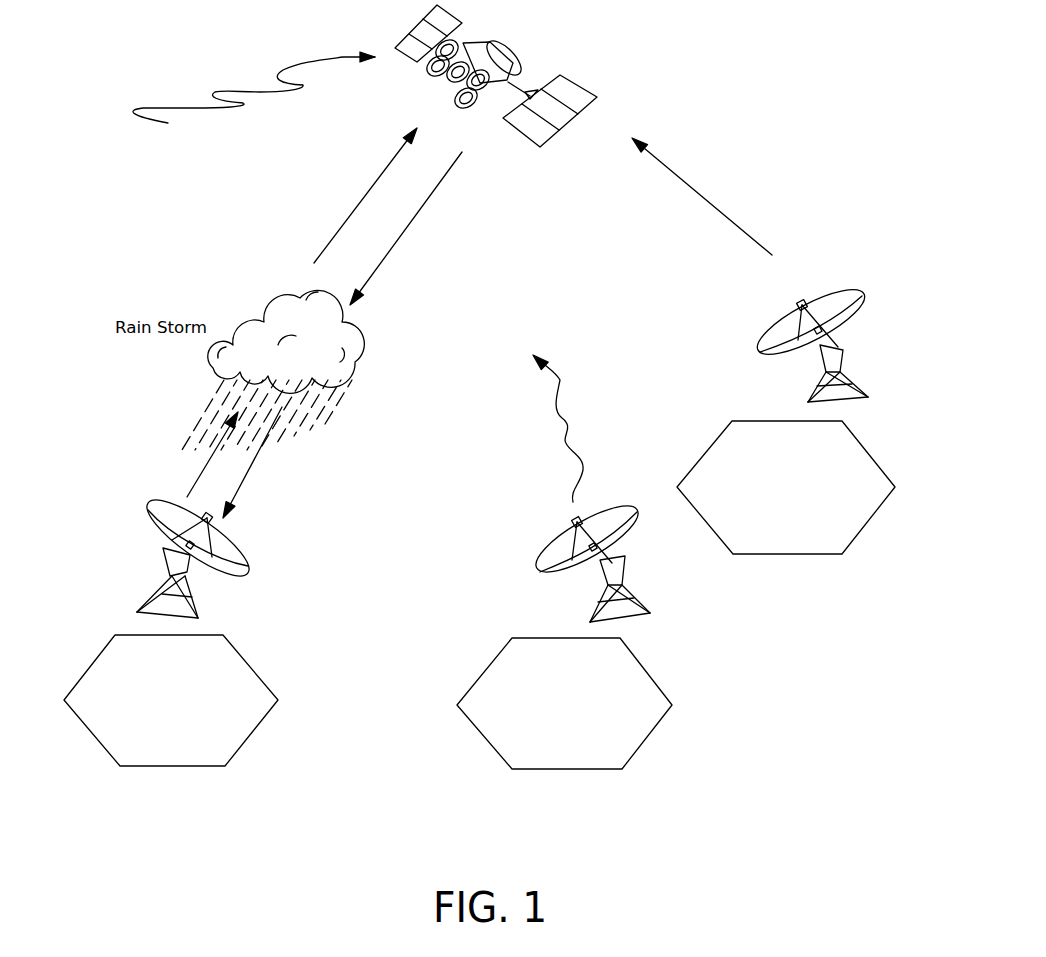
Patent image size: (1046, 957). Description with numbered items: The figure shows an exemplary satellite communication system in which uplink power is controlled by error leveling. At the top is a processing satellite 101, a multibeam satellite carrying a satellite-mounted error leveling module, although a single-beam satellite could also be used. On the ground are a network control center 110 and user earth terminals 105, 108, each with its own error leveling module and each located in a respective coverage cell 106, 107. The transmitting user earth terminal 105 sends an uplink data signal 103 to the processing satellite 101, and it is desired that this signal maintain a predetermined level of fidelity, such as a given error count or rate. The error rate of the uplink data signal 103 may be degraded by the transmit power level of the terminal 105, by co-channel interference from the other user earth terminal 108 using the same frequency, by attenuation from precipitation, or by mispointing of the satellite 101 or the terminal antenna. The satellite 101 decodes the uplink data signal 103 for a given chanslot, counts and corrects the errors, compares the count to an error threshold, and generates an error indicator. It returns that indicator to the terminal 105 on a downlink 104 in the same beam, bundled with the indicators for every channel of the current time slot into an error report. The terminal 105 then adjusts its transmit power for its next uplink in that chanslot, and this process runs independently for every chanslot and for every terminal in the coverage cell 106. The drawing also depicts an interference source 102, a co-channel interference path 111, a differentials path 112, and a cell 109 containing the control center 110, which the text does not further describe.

The processing satellite 101 is at (512, 55).
The interference from other systems 102 is at (215, 92).
The uplink data signal 103 is at (373, 182).
The downlink 104 is at (400, 237).
The user earth terminal 105 is at (163, 557).
The coverage cell 106 is at (252, 732).
The coverage cell 107 is at (650, 733).
The user earth terminal 108 is at (545, 553).
The cell containing control center 109 is at (865, 527).
The network control center 110 is at (860, 315).
The co-channel interference 111 is at (560, 380).
The differentials 112 is at (730, 218).